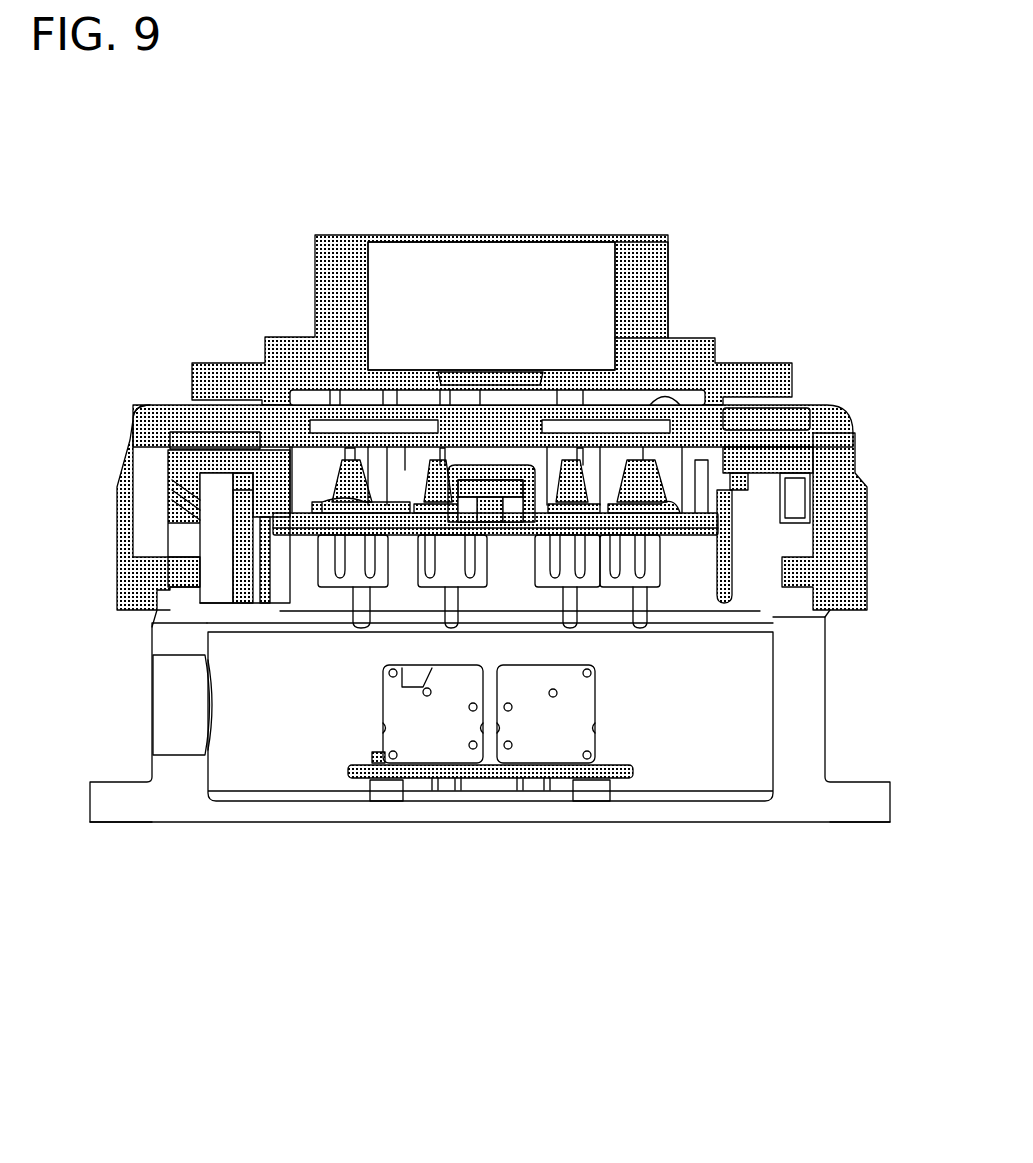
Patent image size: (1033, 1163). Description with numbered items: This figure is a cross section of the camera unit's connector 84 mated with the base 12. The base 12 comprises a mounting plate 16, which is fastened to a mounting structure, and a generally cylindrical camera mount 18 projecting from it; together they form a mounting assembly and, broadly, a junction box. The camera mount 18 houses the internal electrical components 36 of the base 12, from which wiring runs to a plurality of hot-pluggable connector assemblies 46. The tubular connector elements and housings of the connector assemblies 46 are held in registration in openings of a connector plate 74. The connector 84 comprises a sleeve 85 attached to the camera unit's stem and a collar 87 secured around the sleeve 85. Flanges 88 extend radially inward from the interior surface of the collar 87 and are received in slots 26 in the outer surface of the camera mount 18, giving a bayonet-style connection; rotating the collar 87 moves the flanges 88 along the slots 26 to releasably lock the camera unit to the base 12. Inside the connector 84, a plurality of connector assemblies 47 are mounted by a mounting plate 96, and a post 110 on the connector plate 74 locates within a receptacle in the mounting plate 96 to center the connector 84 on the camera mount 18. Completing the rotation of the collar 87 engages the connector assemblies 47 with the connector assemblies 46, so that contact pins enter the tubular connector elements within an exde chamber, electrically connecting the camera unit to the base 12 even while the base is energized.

The base 12 is at (875, 826).
The mounting plate 16 is at (103, 808).
The camera mount 18 is at (805, 690).
The slot 26 is at (165, 553).
The electrical components 36 is at (432, 782).
The connector assembly 46 is at (330, 560).
The connector assembly 47 is at (351, 488).
The connector plate 74 is at (593, 527).
The connector 84 is at (308, 230).
The sleeve 85 is at (633, 260).
The collar 87 is at (150, 430).
The flange 88 is at (800, 578).
The mounting plate 96 is at (508, 498).
The post 110 is at (490, 500).